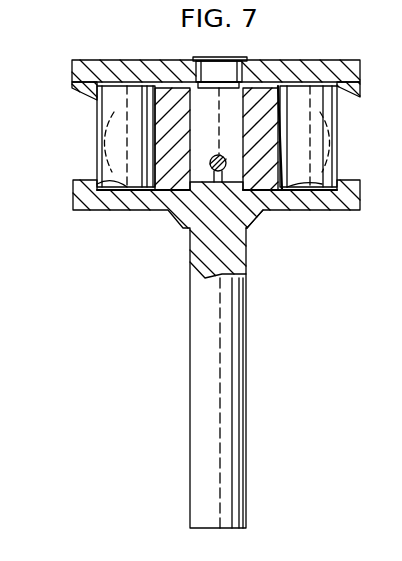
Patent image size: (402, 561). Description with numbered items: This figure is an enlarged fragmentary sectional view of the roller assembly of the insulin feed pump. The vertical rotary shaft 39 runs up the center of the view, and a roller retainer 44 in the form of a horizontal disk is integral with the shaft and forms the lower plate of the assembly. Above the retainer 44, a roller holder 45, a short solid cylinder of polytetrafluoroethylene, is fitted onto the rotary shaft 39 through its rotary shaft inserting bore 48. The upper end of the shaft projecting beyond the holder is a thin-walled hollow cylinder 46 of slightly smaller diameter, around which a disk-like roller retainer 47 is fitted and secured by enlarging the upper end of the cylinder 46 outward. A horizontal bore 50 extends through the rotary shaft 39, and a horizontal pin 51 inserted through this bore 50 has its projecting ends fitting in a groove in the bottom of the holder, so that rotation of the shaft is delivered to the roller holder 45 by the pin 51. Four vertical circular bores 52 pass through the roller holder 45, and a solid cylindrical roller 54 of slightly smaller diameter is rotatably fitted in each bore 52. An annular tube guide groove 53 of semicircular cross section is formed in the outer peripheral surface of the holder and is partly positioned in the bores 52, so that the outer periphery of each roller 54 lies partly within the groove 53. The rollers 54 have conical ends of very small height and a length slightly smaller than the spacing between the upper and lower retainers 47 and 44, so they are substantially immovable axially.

The rotary shaft 39 is at (246, 407).
The roller retainer 44 is at (328, 207).
The roller holder 45 is at (281, 80).
The hollow cylinder 46 is at (195, 58).
The roller retainer 47 is at (334, 72).
The rotary shaft inserting bore 48 is at (243, 98).
The horizontal bore 50 is at (213, 176).
The horizontal pin 51 is at (257, 222).
The circular bore 52 is at (155, 162).
The tube guide groove 53 is at (342, 130).
The roller 54 is at (97, 139).